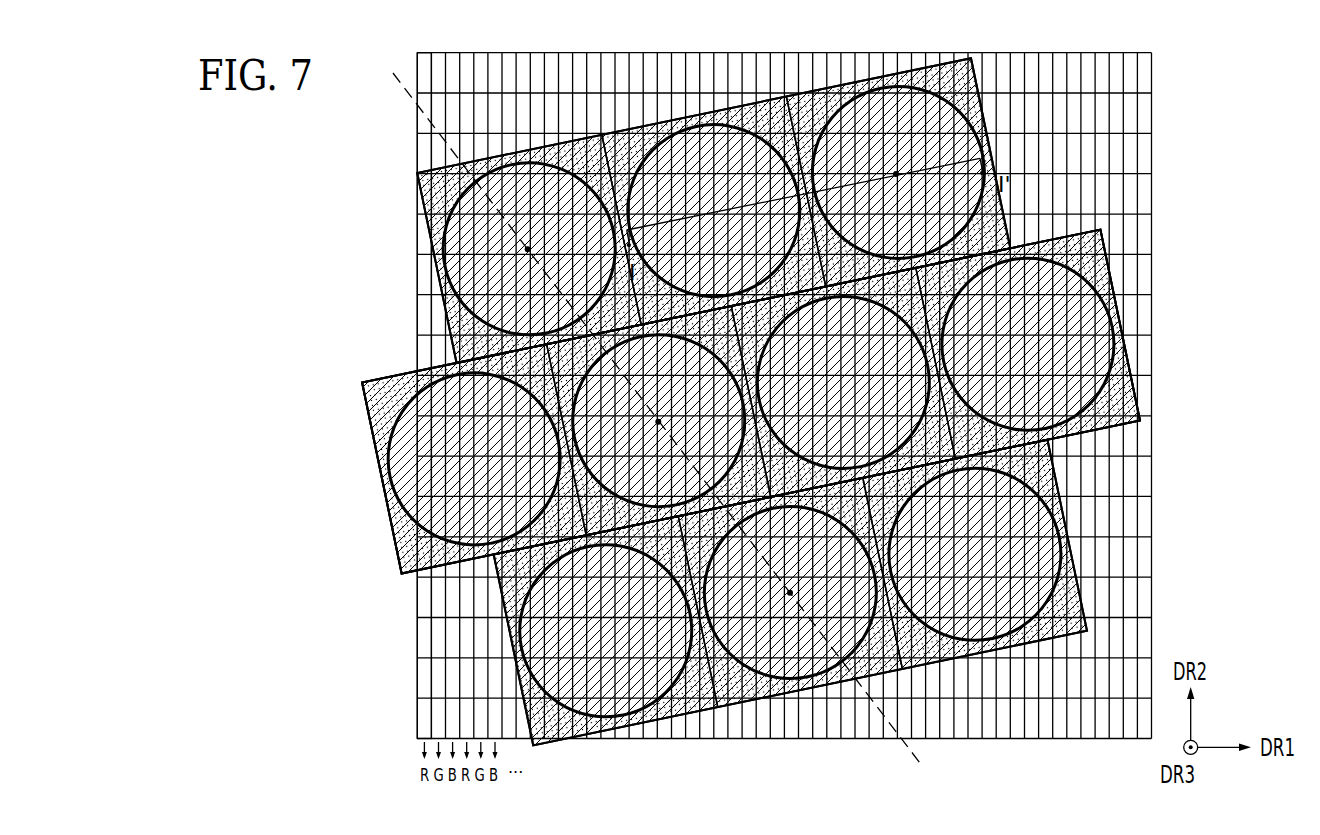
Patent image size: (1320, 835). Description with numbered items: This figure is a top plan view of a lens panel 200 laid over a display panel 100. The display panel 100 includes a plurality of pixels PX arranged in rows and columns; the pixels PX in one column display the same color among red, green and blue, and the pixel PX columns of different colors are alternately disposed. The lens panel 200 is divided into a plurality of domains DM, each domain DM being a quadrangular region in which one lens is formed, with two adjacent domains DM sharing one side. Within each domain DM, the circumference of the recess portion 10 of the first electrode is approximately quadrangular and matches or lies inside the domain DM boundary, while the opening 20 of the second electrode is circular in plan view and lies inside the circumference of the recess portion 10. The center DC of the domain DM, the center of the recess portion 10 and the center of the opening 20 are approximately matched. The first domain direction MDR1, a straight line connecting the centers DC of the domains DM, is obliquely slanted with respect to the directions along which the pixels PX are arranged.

The display panel 100 is at (1160, 101).
The lens panel 200 is at (1103, 236).
The recess portion 10 is at (428, 225).
The opening 20 is at (1110, 303).
The domain DM is at (568, 141).
The pixel PX is at (418, 63).
The center of the domain DC is at (733, 367).
The first domain direction MDR1 is at (670, 430).